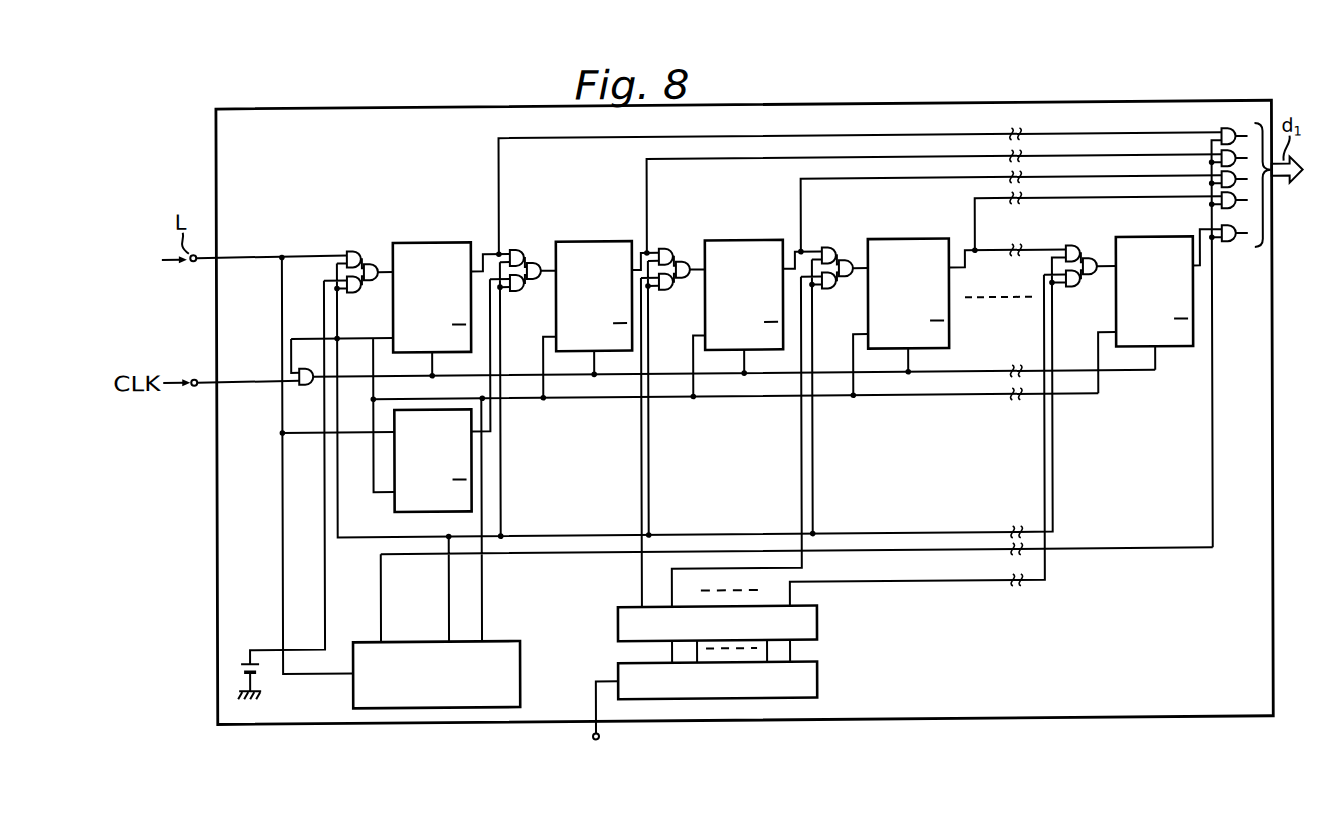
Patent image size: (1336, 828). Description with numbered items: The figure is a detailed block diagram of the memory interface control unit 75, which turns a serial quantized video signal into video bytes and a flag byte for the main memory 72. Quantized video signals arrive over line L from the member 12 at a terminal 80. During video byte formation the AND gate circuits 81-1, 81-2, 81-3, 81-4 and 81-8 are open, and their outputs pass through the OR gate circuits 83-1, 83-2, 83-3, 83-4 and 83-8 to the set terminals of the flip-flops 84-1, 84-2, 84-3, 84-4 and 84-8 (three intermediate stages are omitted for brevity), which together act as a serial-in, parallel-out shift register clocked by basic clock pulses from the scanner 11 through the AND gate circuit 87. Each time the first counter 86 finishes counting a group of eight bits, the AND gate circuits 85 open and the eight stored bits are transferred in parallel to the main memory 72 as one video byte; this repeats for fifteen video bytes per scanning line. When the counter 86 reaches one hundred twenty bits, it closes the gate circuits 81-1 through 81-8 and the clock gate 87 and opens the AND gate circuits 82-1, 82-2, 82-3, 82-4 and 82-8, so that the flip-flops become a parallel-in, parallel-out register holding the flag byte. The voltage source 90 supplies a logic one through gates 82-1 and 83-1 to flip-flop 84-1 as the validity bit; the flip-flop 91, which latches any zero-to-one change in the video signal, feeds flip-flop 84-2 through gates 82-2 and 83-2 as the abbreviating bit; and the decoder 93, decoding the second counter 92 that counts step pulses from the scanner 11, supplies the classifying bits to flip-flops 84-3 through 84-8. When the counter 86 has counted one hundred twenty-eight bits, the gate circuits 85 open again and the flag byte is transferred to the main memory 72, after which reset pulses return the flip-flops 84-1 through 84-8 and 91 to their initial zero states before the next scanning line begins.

The memory interface control unit 75 is at (792, 108).
The AND gate circuits 85 is at (1226, 135).
The main memory 72 is at (1302, 169).
The member shown in FIG. 1 (source side of line L) 12 is at (163, 260).
The terminal 80 is at (191, 261).
The AND gate circuit 87 is at (306, 384).
The flip-flop 91 is at (408, 512).
The voltage source 90 is at (243, 662).
The first counter (counter I) 86 is at (519, 690).
The decoder 93 is at (816, 630).
The second counter (counter II) 92 is at (816, 687).
The scanner 11 is at (595, 741).
The AND gate circuit 81-1 is at (352, 251).
The AND gate circuit 82-1 is at (354, 292).
The OR gate circuit 83-1 is at (369, 264).
The flip-flop 84-1 is at (432, 243).
The AND gate circuit 81-2 is at (515, 251).
The AND gate circuit 82-2 is at (517, 292).
The OR gate circuit 83-2 is at (532, 264).
The flip-flop 84-2 is at (594, 243).
The AND gate circuit 81-3 is at (664, 251).
The AND gate circuit 82-3 is at (666, 292).
The OR gate circuit 83-3 is at (681, 264).
The flip-flop 84-3 is at (744, 243).
The AND gate circuit 81-4 is at (827, 251).
The AND gate circuit 82-4 is at (829, 292).
The OR gate circuit 83-4 is at (844, 264).
The flip-flop 84-4 is at (908, 243).
The AND gate circuit 81-8 is at (1071, 251).
The AND gate circuit 82-8 is at (1073, 292).
The OR gate circuit 83-8 is at (1088, 264).
The flip-flop 84-8 is at (1154, 243).